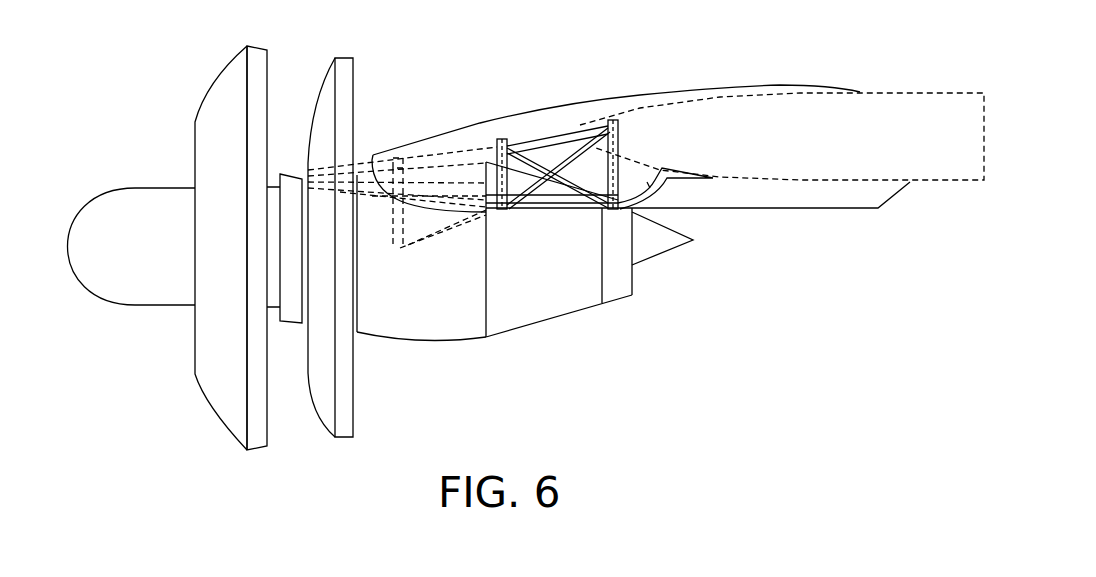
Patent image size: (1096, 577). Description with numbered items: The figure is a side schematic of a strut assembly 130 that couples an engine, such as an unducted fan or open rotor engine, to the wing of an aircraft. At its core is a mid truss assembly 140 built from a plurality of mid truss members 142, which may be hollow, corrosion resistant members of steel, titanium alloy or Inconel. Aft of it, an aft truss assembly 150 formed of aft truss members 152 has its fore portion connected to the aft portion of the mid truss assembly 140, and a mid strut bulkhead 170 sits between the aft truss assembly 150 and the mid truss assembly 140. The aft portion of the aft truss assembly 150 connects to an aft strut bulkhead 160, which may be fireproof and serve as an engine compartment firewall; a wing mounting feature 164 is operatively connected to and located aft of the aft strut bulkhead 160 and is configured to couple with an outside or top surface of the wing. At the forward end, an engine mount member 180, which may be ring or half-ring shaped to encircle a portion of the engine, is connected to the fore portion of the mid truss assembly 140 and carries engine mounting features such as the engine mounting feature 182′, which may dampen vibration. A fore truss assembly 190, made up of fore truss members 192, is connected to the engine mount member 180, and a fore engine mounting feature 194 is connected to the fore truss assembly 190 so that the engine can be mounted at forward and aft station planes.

The strut assembly 130 is at (467, 120).
The mid truss assembly 140 is at (455, 243).
The mid truss members 142 is at (463, 163).
The aft truss assembly 150 is at (548, 223).
The aft truss members 152 is at (587, 142).
The aft strut bulkhead 160 is at (613, 120).
The wing mounting feature 164 is at (687, 178).
The mid strut bulkhead 170 is at (505, 139).
The engine mount member 180 is at (400, 157).
The engine mounting feature 182′ is at (387, 258).
The fore truss assembly 190 is at (306, 158).
The fore truss members 192 is at (365, 158).
The fore engine mounting feature 194 is at (308, 173).